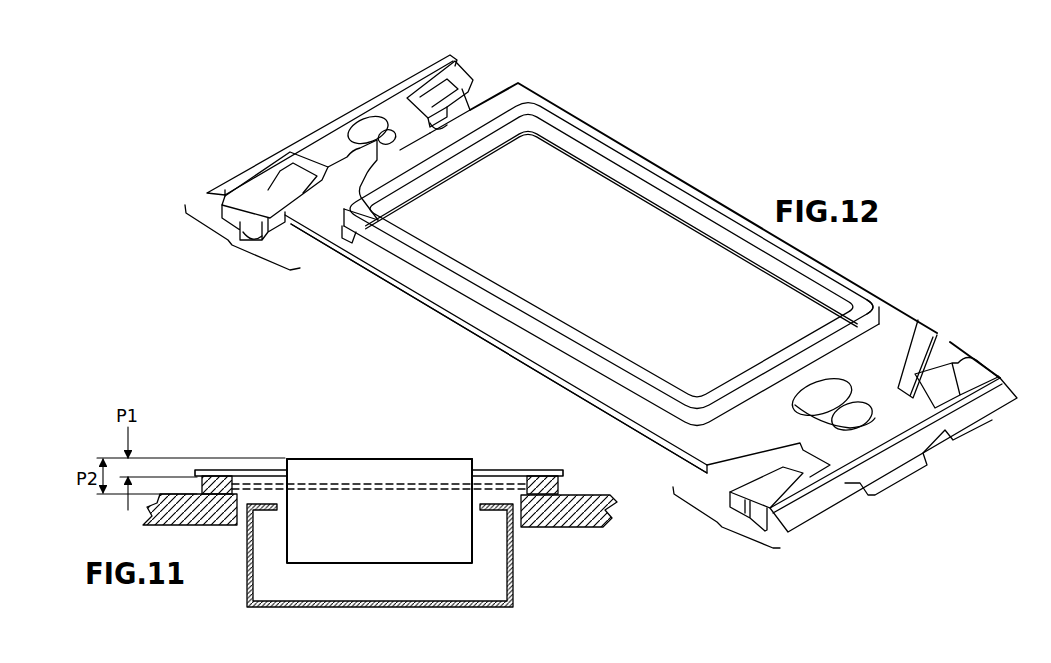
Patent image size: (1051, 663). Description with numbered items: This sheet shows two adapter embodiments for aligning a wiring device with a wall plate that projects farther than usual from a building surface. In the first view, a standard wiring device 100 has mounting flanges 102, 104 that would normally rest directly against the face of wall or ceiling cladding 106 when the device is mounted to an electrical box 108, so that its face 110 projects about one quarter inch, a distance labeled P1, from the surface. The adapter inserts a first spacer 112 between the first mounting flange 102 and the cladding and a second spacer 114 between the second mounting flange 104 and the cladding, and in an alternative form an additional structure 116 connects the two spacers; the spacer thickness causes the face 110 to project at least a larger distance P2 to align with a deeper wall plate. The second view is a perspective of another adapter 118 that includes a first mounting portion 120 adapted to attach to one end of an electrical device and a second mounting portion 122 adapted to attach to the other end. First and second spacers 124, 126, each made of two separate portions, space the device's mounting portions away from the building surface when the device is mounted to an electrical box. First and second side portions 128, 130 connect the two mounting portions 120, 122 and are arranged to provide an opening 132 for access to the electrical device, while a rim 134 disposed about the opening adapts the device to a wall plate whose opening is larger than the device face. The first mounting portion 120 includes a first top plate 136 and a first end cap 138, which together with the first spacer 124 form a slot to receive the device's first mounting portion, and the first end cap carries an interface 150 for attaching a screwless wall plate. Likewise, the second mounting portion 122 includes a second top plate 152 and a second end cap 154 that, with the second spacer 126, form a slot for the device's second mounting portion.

In FIG. 11, the wiring device 100 is at (438, 455).
In FIG. 11, the mounting flange 102 is at (260, 469).
In FIG. 11, the mounting flange 104 is at (497, 469).
In FIG. 11, the wall or ceiling cladding 106 is at (212, 527).
In FIG. 11, the electrical box 108 is at (260, 607).
In FIG. 11, the face 110 is at (380, 457).
In FIG. 11, the first spacer 112 is at (217, 480).
In FIG. 11, the second spacer 114 is at (540, 490).
In FIG. 11, the additional structure 116 is at (378, 493).
In FIG. 12, the adapter 118 is at (723, 170).
In FIG. 12, the first mounting portion 120 is at (726, 517).
In FIG. 12, the second mounting portion 122 is at (242, 237).
In FIG. 12, the first spacer 124 is at (770, 485).
In FIG. 12, the second spacer 126 is at (263, 192).
In FIG. 12, the first side portion 128 is at (487, 323).
In FIG. 12, the second side portion 130 is at (677, 216).
In FIG. 12, the opening 132 is at (602, 198).
In FIG. 12, the rim 134 is at (867, 307).
In FIG. 12, the first top plate 136 is at (905, 340).
In FIG. 12, the first end cap 138 is at (993, 373).
In FIG. 12, the interface 150 is at (800, 515).
In FIG. 12, the second top plate 152 is at (378, 115).
In FIG. 12, the second end cap 154 is at (452, 53).